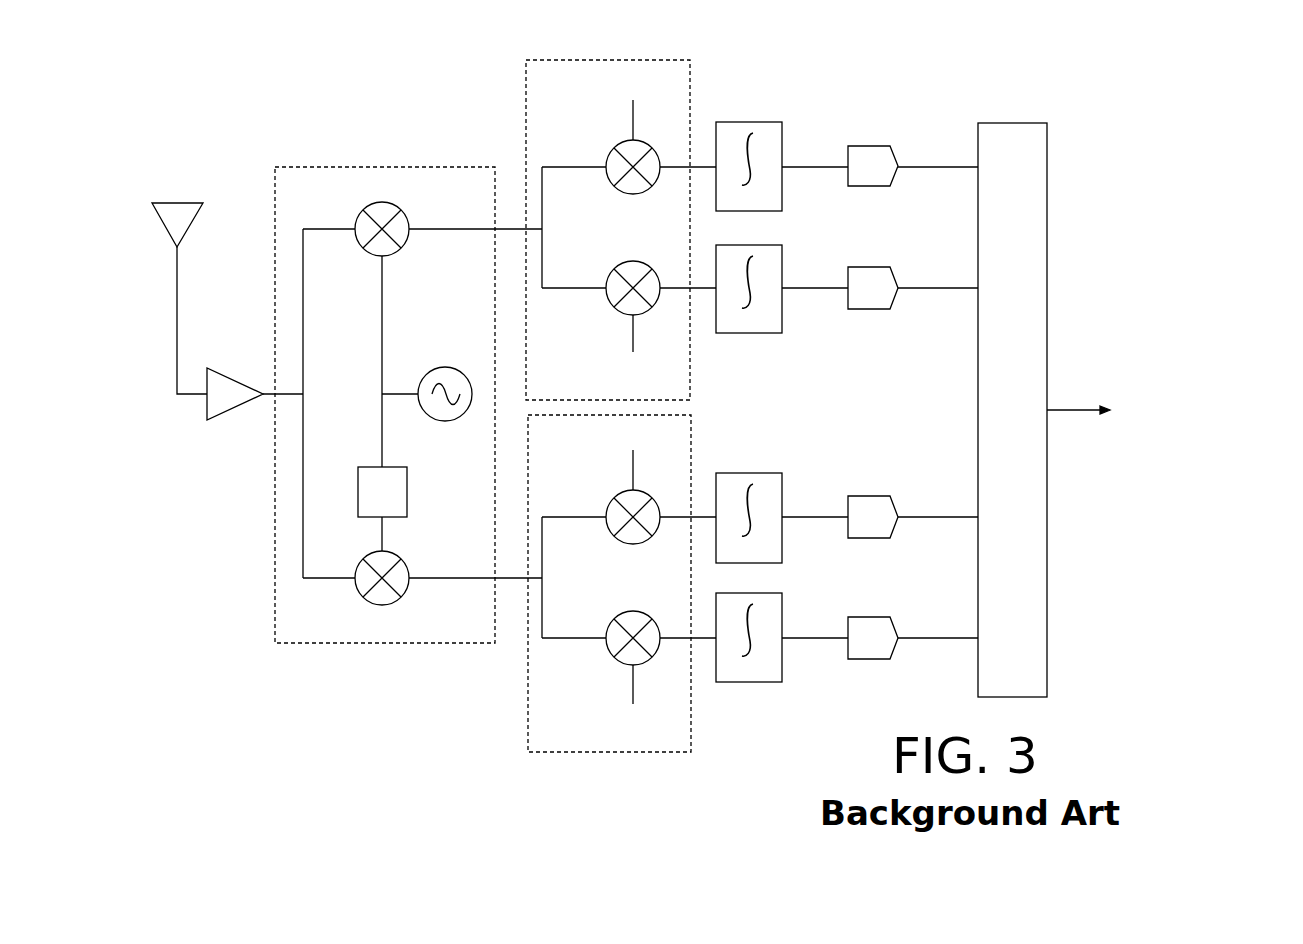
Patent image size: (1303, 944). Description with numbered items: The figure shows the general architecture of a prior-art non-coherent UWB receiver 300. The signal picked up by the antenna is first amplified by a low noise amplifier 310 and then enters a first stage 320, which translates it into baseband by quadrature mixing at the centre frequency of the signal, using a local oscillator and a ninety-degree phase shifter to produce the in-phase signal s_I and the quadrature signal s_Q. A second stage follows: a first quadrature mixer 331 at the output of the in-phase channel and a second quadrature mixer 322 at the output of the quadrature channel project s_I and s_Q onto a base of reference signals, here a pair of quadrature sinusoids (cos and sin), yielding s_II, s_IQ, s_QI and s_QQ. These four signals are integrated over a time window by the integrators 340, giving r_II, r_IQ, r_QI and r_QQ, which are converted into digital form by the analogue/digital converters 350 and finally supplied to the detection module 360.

The receiver 300 is at (1118, 122).
The low noise amplifier 310 is at (209, 368).
The first stage 320 is at (355, 168).
The first quadrature mixer 331 is at (526, 108).
The second quadrature mixer 322 is at (528, 714).
The integrators 340 is at (740, 122).
The analogue/digital converters 350 is at (868, 146).
The detection module 360 is at (1005, 123).